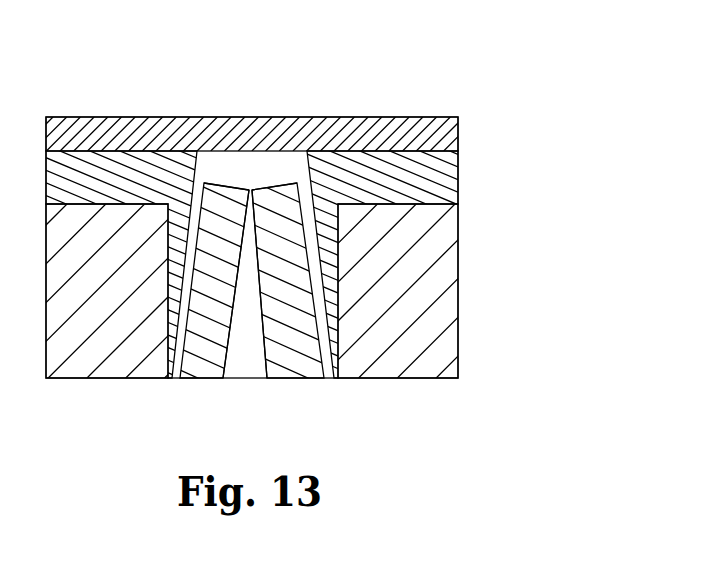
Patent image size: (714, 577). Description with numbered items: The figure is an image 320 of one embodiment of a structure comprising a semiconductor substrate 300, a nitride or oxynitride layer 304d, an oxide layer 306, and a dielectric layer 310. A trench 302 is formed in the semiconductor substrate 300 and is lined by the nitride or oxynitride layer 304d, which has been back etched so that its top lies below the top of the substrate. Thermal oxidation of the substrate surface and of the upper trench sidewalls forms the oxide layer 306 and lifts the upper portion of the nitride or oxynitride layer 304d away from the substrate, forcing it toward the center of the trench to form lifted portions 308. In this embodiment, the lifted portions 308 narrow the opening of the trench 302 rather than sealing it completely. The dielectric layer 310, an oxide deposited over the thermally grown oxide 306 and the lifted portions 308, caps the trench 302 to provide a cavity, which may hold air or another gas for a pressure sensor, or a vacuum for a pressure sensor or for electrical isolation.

The semiconductor substrate 300 is at (453, 318).
The trench 302 is at (247, 380).
The nitride or oxynitride layer 304d is at (200, 384).
The oxide layer 306 is at (452, 177).
The lifted portions 308 is at (268, 182).
The dielectric layer 310 is at (458, 132).
The image 320 is at (383, 62).